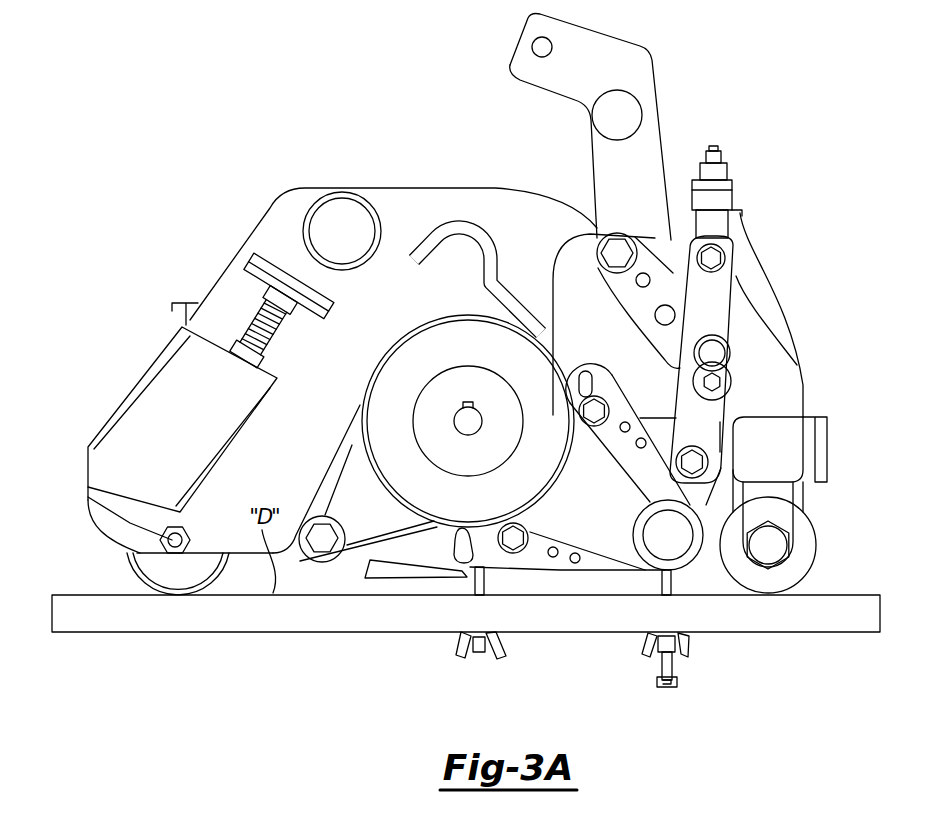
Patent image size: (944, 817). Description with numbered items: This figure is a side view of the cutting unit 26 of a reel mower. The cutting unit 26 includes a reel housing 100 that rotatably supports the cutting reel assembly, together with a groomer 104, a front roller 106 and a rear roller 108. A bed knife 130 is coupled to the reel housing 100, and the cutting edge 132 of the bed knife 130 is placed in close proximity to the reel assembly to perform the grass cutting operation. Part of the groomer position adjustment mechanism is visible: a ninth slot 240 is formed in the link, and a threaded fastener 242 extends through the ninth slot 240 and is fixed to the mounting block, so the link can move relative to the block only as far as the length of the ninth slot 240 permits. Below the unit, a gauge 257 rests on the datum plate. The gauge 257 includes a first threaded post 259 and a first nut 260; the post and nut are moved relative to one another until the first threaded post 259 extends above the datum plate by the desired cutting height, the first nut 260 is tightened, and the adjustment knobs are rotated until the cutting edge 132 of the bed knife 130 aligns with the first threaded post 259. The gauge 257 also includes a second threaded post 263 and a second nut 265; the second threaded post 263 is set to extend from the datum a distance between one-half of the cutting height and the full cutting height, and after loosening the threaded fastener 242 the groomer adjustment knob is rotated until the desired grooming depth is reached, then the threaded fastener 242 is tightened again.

The cutting unit 26 is at (410, 80).
The reel housing 100 is at (272, 193).
The groomer 104 is at (684, 575).
The front roller 106 is at (815, 553).
The rear roller 108 is at (132, 564).
The bed knife 130 is at (385, 559).
The cutting edge 132 is at (467, 552).
The ninth slot 240 is at (707, 379).
The threaded fastener 242 is at (713, 353).
The gauge 257 is at (358, 642).
The first threaded post 259 is at (482, 577).
The first nut 260 is at (457, 648).
The second threaded post 263 is at (660, 663).
The second nut 265 is at (690, 651).